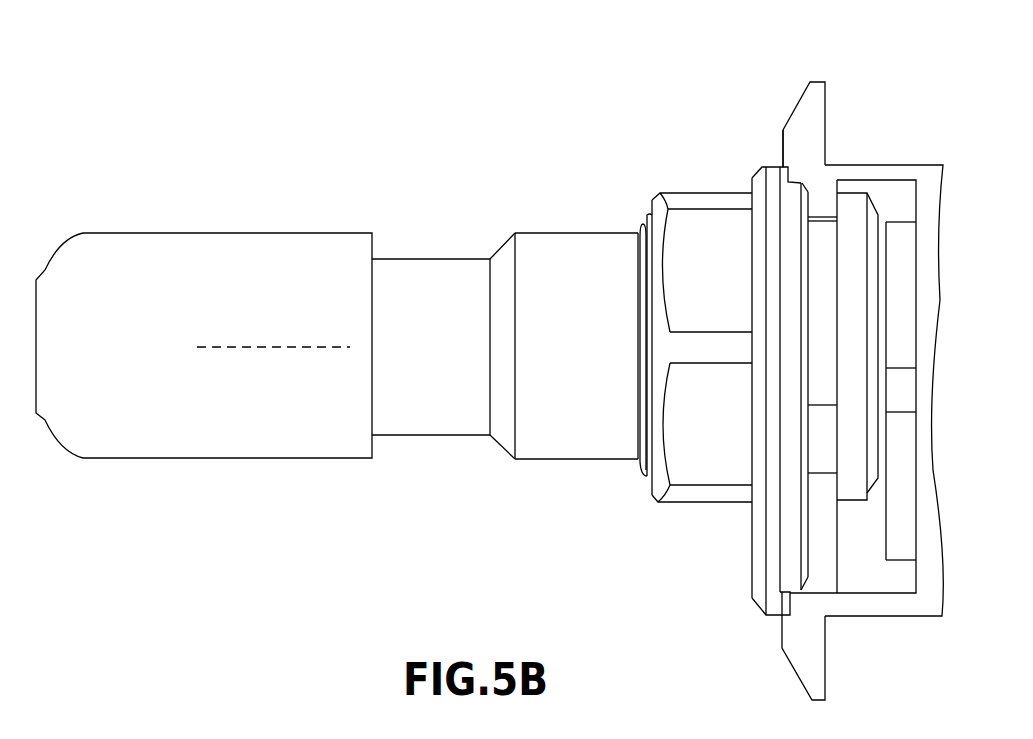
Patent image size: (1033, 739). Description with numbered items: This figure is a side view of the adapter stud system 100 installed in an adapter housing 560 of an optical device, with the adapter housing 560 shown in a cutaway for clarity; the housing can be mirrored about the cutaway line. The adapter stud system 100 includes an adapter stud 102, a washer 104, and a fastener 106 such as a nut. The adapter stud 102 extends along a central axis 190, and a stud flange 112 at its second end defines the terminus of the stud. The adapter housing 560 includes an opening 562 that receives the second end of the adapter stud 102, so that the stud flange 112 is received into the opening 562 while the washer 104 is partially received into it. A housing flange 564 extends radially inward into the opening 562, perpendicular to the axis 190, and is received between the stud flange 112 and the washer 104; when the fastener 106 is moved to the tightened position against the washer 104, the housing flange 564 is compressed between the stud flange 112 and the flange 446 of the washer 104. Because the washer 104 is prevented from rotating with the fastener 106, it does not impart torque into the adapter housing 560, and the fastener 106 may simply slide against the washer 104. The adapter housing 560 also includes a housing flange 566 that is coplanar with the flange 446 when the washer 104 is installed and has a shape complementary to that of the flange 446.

The adapter stud system 100 is at (160, 162).
The adapter stud 102 is at (277, 233).
The central/longitudinal axis 190 is at (238, 347).
The fastener 106 is at (697, 200).
The washer 104 is at (763, 172).
The flange 446 is at (790, 298).
The housing flange 566 is at (795, 173).
The housing flange 564 is at (818, 205).
The stud flange 112 is at (850, 205).
The adapter housing 560 is at (889, 167).
The opening 562 is at (812, 558).